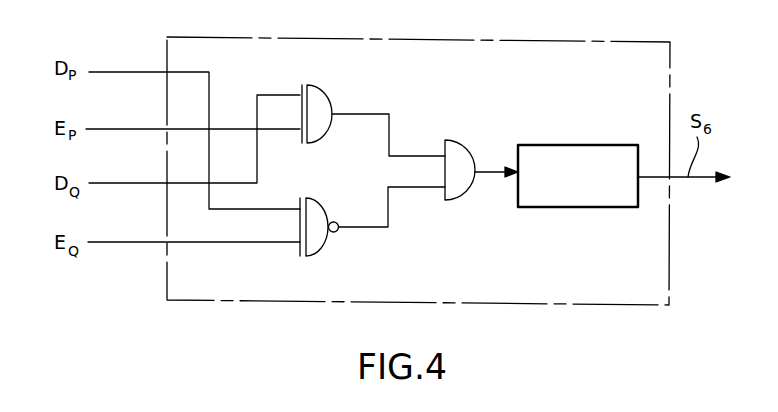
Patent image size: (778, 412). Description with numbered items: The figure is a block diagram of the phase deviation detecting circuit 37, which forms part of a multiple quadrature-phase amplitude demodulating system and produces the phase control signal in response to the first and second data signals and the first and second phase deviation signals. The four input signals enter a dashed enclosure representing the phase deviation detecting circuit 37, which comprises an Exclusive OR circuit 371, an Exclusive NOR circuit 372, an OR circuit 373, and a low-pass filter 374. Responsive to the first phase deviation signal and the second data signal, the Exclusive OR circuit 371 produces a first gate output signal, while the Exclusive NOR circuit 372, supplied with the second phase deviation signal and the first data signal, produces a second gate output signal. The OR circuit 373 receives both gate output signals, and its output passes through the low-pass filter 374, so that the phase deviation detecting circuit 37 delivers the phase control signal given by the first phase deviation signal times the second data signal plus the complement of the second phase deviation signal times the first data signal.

The phase deviation detecting circuit 37 is at (243, 302).
The Exclusive OR circuit 371 is at (330, 103).
The Exclusive NOR circuit 372 is at (322, 200).
The OR circuit 373 is at (459, 142).
The low-pass filter 374 is at (584, 145).